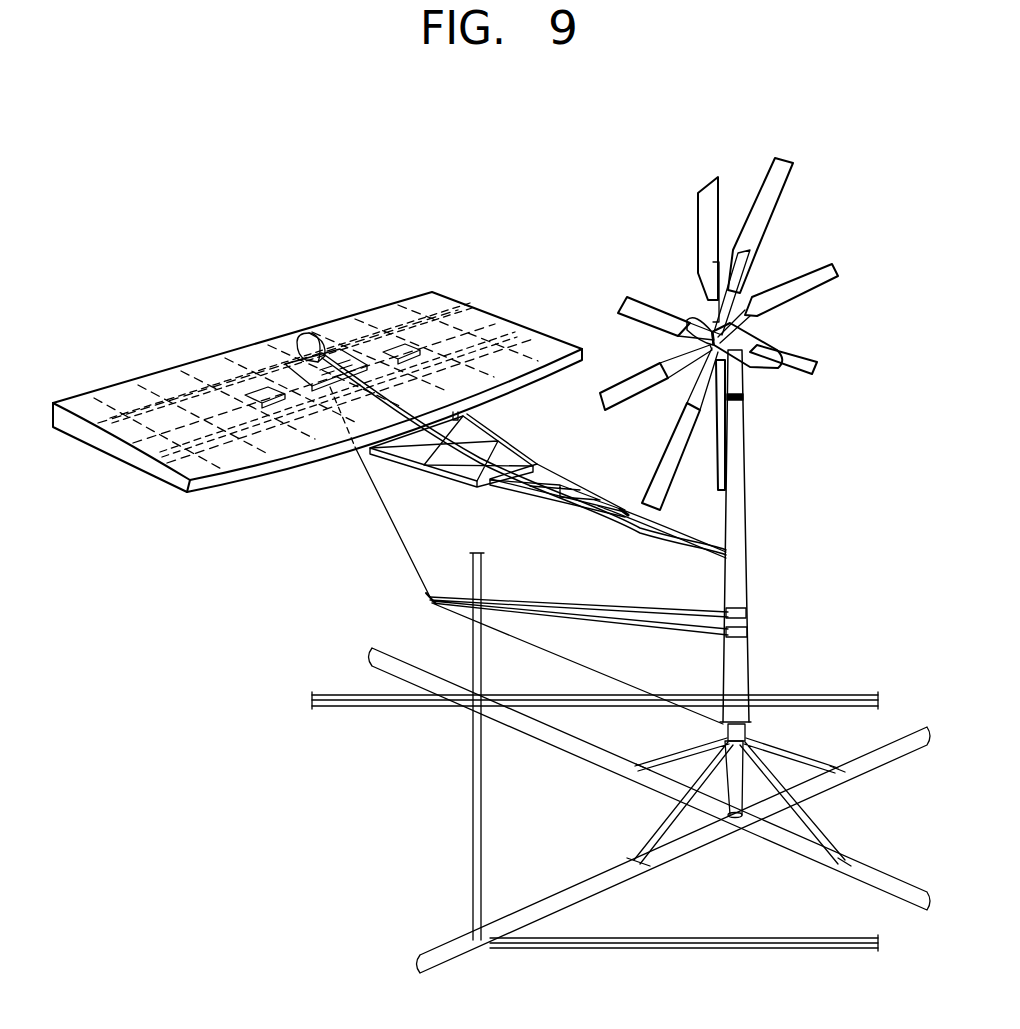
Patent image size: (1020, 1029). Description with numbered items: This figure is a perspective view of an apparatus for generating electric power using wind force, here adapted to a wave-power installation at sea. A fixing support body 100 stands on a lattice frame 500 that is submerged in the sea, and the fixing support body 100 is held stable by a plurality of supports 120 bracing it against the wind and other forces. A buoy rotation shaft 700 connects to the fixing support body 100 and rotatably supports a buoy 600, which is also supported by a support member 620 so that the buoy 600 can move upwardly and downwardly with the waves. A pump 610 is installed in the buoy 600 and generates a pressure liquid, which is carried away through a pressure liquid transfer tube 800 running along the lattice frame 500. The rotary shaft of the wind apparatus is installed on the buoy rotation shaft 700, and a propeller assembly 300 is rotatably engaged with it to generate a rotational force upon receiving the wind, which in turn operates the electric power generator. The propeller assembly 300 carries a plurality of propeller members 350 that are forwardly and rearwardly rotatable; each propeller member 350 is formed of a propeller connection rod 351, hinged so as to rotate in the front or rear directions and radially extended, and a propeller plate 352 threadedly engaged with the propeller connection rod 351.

The fixing support body 100 is at (740, 775).
The supports 120 is at (820, 822).
The propeller assembly 300 is at (759, 334).
The propeller members 350 is at (818, 246).
The propeller connection rods 351 is at (757, 258).
The propeller plate 352 is at (778, 193).
The lattice frame 500 is at (380, 702).
The buoy 600 is at (118, 390).
The pump 610 is at (310, 335).
The support member 620 is at (440, 456).
The buoy rotation shaft 700 is at (738, 566).
The pressure liquid transfer tube 800 is at (572, 900).